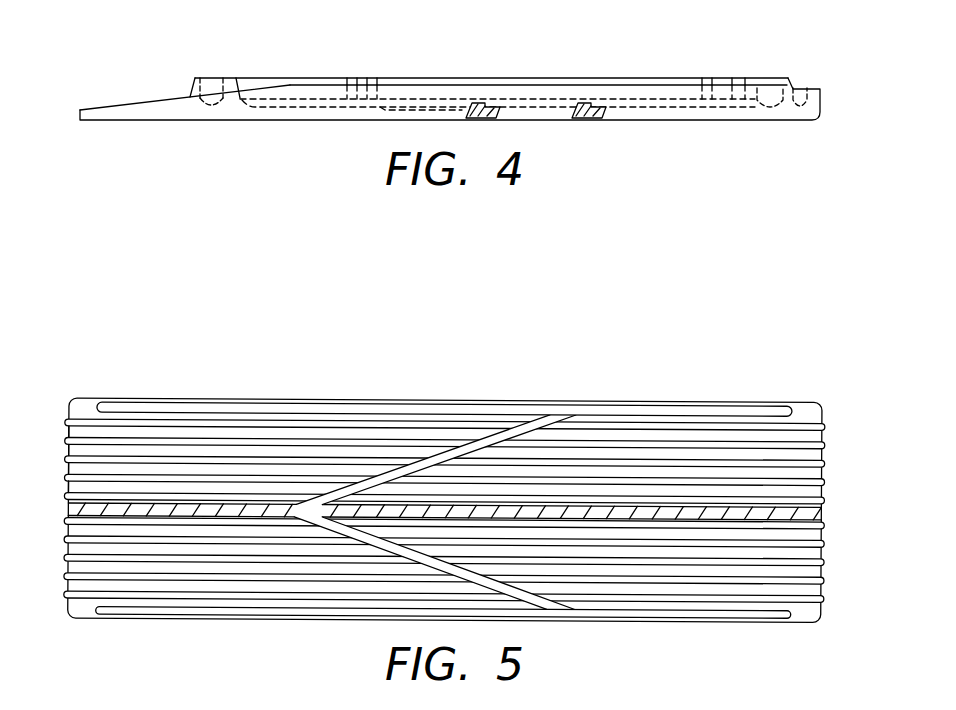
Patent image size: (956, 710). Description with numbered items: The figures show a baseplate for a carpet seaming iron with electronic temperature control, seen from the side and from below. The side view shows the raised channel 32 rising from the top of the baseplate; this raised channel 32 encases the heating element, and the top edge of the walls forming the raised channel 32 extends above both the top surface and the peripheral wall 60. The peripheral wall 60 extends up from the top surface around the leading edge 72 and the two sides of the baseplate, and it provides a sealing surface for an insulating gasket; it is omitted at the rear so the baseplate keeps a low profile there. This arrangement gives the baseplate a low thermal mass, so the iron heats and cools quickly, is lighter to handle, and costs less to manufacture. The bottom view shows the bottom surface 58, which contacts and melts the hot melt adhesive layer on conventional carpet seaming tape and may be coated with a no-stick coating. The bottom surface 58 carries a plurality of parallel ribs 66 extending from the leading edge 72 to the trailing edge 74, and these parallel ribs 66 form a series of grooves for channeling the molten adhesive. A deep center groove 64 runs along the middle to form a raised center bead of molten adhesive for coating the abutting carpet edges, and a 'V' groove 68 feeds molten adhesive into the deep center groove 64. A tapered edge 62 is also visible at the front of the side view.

In FIG. 4, the raised channel 32 is at (216, 105).
In FIG. 4, the peripheral wall 60 is at (823, 93).
In FIG. 4, the tapered leading edge 62 is at (118, 106).
In FIG. 5, the bottom surface 58 is at (750, 427).
In FIG. 5, the deep center groove 64 is at (824, 511).
In FIG. 5, the parallel ribs 66 is at (772, 560).
In FIG. 5, the 'V' groove 68 is at (490, 435).
In FIG. 5, the leading edge 72 is at (827, 456).
In FIG. 5, the trailing edge 74 is at (66, 448).